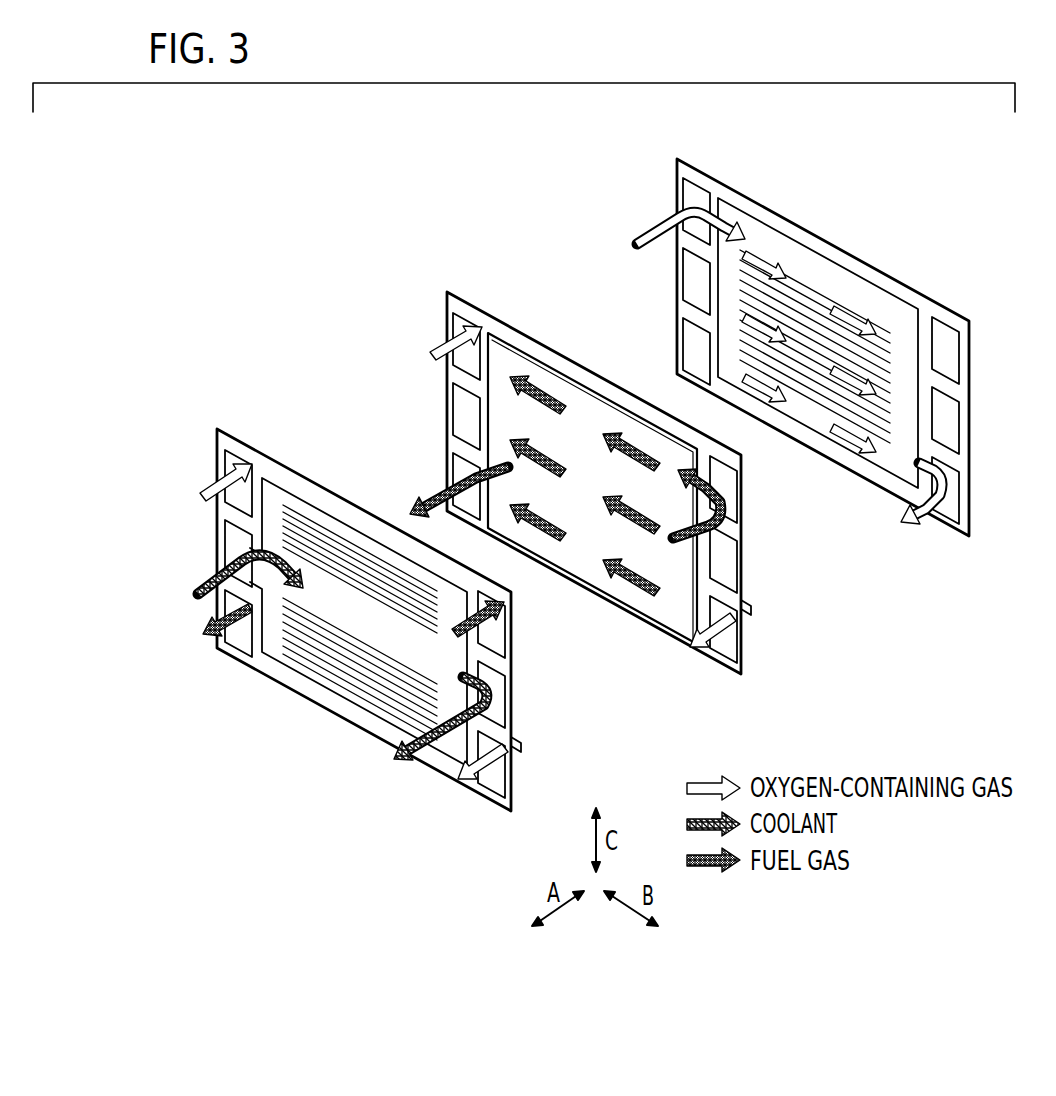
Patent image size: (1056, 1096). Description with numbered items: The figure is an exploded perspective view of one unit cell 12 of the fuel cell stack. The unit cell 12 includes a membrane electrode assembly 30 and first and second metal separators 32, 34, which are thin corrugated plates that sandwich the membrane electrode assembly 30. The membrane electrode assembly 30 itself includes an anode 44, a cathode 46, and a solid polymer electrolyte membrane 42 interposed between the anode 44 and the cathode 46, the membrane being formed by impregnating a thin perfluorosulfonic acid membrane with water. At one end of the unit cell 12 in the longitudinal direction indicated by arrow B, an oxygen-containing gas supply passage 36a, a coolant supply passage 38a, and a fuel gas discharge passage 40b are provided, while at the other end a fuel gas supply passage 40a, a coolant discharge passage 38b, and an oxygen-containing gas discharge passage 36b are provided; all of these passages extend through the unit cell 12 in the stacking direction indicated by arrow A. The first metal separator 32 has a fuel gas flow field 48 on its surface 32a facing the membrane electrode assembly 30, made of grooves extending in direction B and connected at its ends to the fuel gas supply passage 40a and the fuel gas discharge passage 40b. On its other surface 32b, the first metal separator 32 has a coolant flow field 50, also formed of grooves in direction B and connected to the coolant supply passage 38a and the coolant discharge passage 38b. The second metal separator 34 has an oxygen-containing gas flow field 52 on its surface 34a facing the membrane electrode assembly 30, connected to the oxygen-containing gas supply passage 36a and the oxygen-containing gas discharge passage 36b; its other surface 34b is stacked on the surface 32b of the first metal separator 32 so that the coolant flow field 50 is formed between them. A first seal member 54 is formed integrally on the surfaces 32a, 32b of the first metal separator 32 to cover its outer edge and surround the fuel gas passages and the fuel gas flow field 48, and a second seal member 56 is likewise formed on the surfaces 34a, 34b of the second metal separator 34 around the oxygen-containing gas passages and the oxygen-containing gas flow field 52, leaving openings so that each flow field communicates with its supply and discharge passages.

The unit cell 12 is at (241, 308).
The membrane electrode assembly 30 is at (447, 292).
The first metal separator 32 is at (217, 428).
The second metal separator 34 is at (677, 158).
The surface 32a is at (428, 760).
The surface 32b is at (385, 738).
The surface 34a is at (883, 485).
The surface 34b is at (820, 442).
The oxygen-containing gas supply passage 36a is at (231, 460).
The oxygen-containing gas discharge passage 36b is at (488, 773).
The coolant supply passage 38a is at (230, 562).
The coolant discharge passage 38b is at (487, 702).
The fuel gas supply passage 40a is at (498, 637).
The fuel gas discharge passage 40b is at (230, 610).
The solid polymer electrolyte membrane 42 is at (702, 662).
The anode 44 is at (662, 613).
The cathode 46 is at (577, 410).
The fuel gas flow field 48 is at (303, 510).
The coolant flow field 50 is at (307, 660).
The oxygen-containing gas flow field 52 is at (851, 287).
The first seal member 54 is at (346, 719).
The second seal member 56 is at (913, 292).